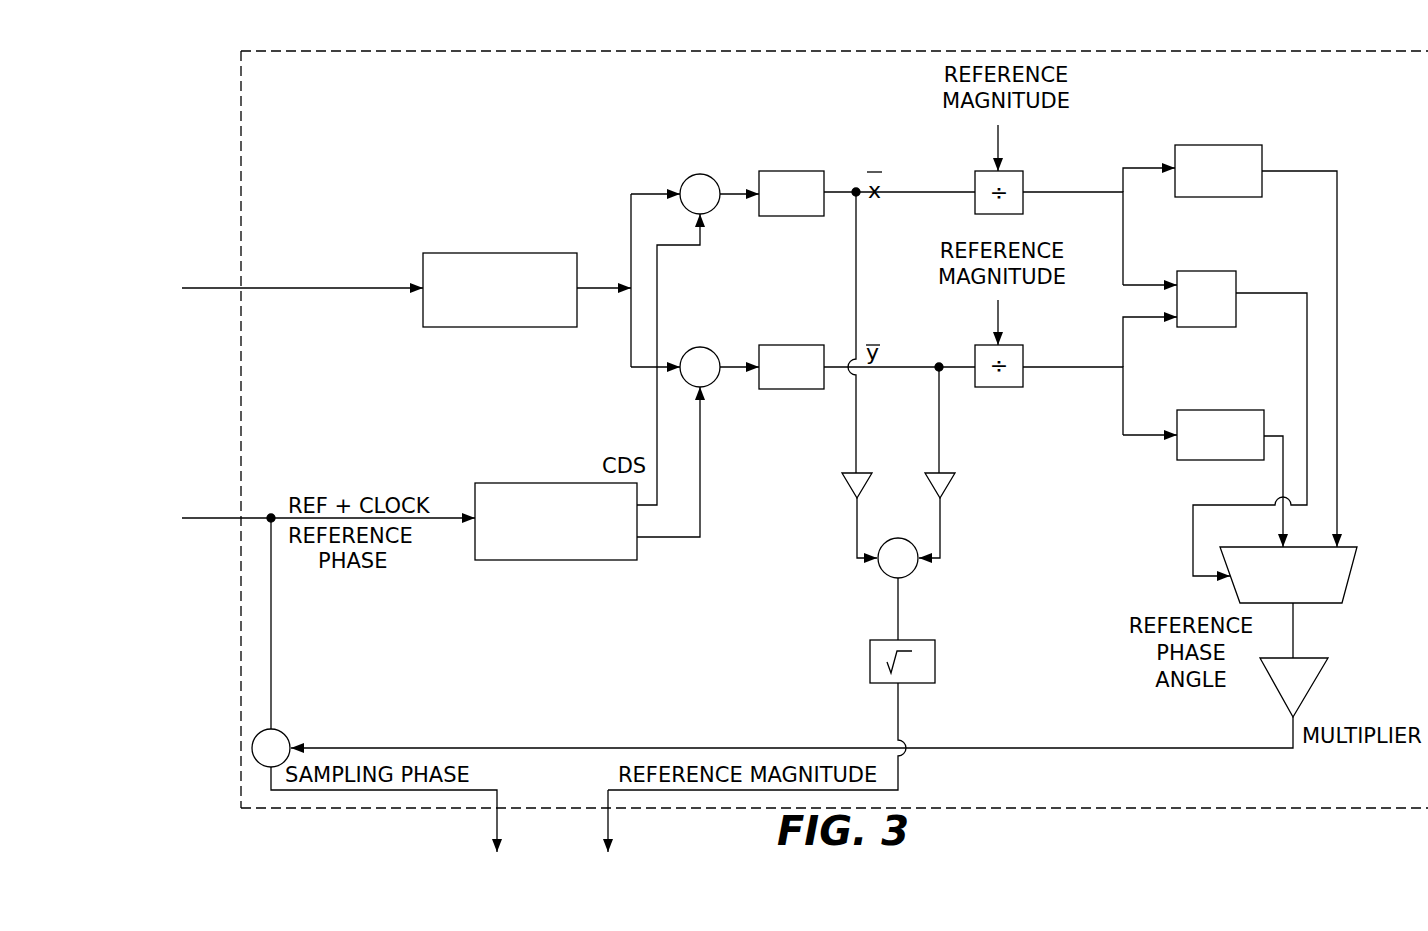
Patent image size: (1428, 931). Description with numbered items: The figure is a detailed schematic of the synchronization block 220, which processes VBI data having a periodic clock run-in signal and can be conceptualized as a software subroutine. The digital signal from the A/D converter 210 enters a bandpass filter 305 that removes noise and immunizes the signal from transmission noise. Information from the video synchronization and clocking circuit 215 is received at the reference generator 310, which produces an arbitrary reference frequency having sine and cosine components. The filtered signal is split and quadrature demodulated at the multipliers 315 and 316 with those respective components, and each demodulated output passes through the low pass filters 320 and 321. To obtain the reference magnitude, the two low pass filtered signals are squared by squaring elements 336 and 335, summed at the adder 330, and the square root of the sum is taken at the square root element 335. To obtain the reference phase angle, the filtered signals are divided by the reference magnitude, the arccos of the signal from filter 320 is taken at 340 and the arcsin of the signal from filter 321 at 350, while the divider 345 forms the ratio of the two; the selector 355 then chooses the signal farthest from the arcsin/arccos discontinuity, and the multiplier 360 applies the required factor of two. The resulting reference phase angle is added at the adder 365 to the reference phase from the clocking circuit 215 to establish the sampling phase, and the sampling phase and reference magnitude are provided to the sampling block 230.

The synchronization block 220 is at (745, 51).
The A/D converter 210 is at (302, 291).
The video synchronization and clocking circuit 215 is at (328, 520).
The sampling block 230 is at (439, 809).
The bandpass filter 305 is at (505, 253).
The reference frequency generator 310 is at (493, 483).
The quadrature demodulator 315 is at (700, 174).
The quadrature demodulator 316 is at (700, 347).
The low pass filter 320 is at (787, 171).
The low pass filter 321 is at (787, 345).
The adder 330 is at (912, 572).
The square root element 335 is at (950, 473).
The squarer 336 is at (848, 473).
The arccos element 340 is at (1222, 145).
The divider 345 is at (1210, 271).
The arcsin element 350 is at (1218, 410).
The selector 355 is at (1352, 555).
The factor-of-two multiplier 360 is at (1320, 670).
The sampling phase adder 365 is at (286, 735).